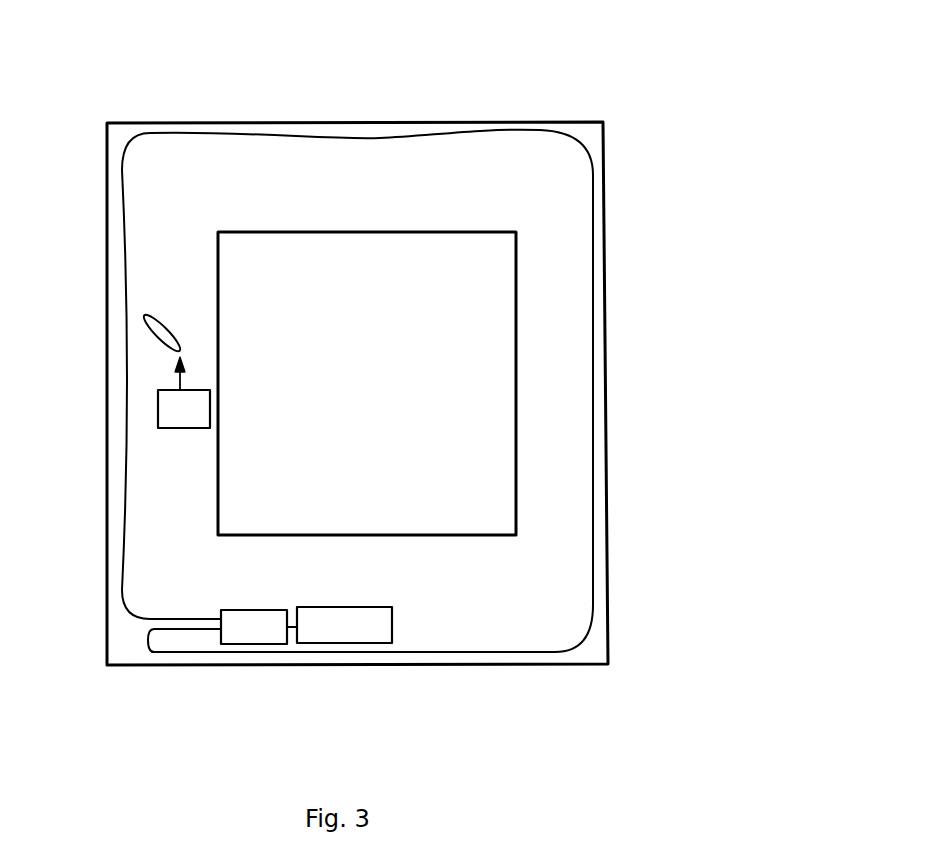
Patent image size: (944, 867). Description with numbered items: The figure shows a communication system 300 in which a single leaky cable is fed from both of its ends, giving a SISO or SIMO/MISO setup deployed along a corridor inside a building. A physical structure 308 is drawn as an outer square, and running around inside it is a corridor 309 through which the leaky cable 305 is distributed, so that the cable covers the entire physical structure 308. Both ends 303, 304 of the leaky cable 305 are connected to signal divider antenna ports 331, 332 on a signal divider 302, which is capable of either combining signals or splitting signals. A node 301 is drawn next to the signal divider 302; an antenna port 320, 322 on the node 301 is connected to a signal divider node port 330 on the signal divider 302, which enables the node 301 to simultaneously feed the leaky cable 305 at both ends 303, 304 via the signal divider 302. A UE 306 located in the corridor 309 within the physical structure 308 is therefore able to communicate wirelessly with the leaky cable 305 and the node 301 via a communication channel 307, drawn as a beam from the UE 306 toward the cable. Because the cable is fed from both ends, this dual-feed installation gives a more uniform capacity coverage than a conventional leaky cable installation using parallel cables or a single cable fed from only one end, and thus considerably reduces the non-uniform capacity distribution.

The communication system 300 is at (113, 55).
The node 301 is at (320, 633).
The signal divider 302 is at (275, 640).
The end of the leaky cable 303 is at (150, 638).
The end of the leaky cable 304 is at (206, 655).
The leaky cable 305 is at (120, 568).
The UE 306 is at (158, 413).
The communication channel 307 is at (145, 318).
The physical structure 308 is at (482, 122).
The corridor 309 is at (118, 138).
The antenna port 320 is at (292, 608).
The antenna port 322 is at (397, 622).
The signal divider node port 330 is at (290, 612).
The signal divider antenna port 331 is at (221, 613).
The signal divider antenna port 332 is at (215, 620).